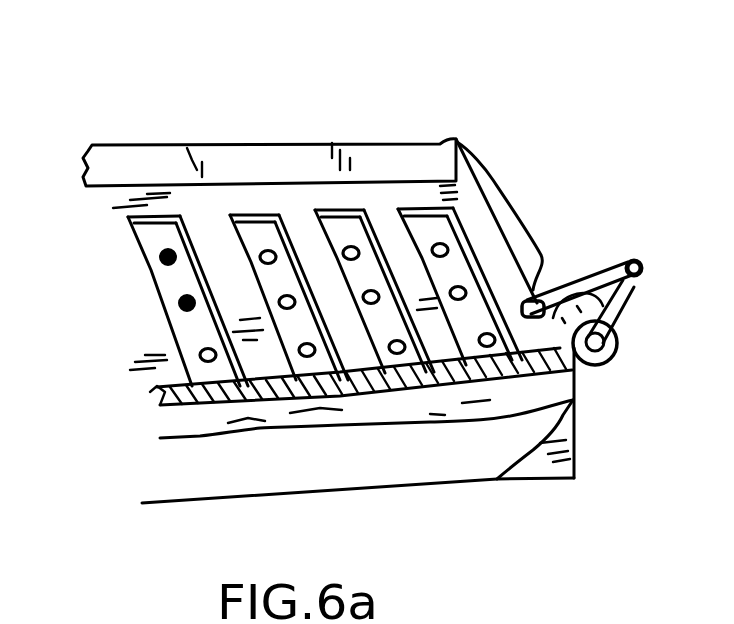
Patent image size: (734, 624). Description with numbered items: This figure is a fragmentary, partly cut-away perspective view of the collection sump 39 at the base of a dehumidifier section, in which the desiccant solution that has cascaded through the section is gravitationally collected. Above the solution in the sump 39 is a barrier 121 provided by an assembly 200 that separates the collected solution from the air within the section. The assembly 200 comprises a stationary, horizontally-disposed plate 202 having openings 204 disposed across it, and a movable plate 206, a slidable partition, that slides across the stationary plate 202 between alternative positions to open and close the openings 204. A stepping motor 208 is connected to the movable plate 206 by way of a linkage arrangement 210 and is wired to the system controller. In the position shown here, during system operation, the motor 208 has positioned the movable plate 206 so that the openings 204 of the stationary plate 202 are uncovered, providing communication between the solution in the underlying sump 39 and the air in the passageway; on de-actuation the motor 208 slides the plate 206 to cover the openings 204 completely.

The assembly 200 is at (441, 108).
The barrier 121 is at (302, 200).
The openings 204 is at (188, 300).
The movable plate 206 is at (479, 236).
The stepping motor 208 is at (612, 358).
The linkage arrangement 210 is at (630, 295).
The stationary plate 202 is at (573, 403).
The collection sump 39 is at (445, 478).